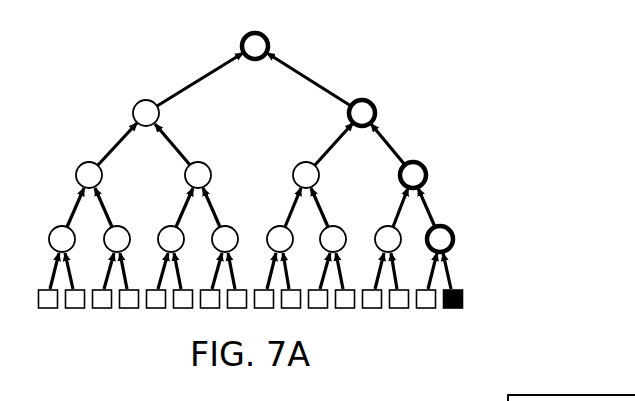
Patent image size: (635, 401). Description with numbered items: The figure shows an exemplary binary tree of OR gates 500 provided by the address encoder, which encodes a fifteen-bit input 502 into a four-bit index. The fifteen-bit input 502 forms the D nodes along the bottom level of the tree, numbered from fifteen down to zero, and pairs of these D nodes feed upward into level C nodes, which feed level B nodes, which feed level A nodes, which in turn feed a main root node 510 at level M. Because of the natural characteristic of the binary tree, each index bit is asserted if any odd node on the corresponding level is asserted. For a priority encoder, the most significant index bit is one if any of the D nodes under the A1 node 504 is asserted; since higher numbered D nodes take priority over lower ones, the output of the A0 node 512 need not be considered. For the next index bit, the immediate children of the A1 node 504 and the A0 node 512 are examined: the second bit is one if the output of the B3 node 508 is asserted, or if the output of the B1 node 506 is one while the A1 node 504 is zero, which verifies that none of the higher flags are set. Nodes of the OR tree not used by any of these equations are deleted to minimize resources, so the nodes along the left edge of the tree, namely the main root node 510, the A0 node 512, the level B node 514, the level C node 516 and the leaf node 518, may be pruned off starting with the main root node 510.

The binary tree of OR gates 500 is at (542, 10).
The 15-bit input 502 is at (36, 310).
The A1 node 504 is at (140, 99).
The B1 node 506 is at (298, 164).
The B3 node 508 is at (88, 162).
The main root node 510 is at (265, 35).
The A0 node 512 is at (374, 102).
The left-edge tree node (level B) 514 is at (425, 168).
The left-edge tree node (level C) 516 is at (452, 233).
The left-edge tree node (level D) 518 is at (463, 297).